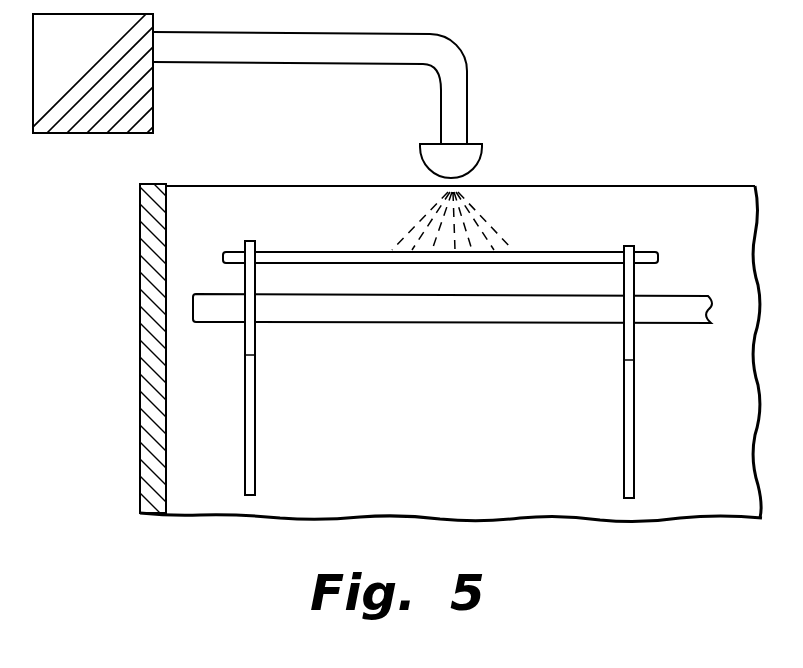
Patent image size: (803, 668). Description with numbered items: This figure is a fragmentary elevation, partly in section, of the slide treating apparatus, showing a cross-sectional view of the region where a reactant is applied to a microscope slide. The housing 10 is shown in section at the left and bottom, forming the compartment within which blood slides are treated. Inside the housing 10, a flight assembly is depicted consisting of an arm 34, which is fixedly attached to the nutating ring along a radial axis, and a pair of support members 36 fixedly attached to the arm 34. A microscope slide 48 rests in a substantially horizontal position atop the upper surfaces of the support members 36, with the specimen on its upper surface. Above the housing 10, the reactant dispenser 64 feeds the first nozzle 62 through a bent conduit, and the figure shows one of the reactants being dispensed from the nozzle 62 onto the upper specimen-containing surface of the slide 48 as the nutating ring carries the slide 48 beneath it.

The housing 10 is at (138, 456).
The arm 34 is at (444, 323).
The support members 36 is at (255, 468).
The slide 48 is at (643, 252).
The first nozzle 62 is at (473, 153).
The reactant dispenser 64 is at (77, 134).